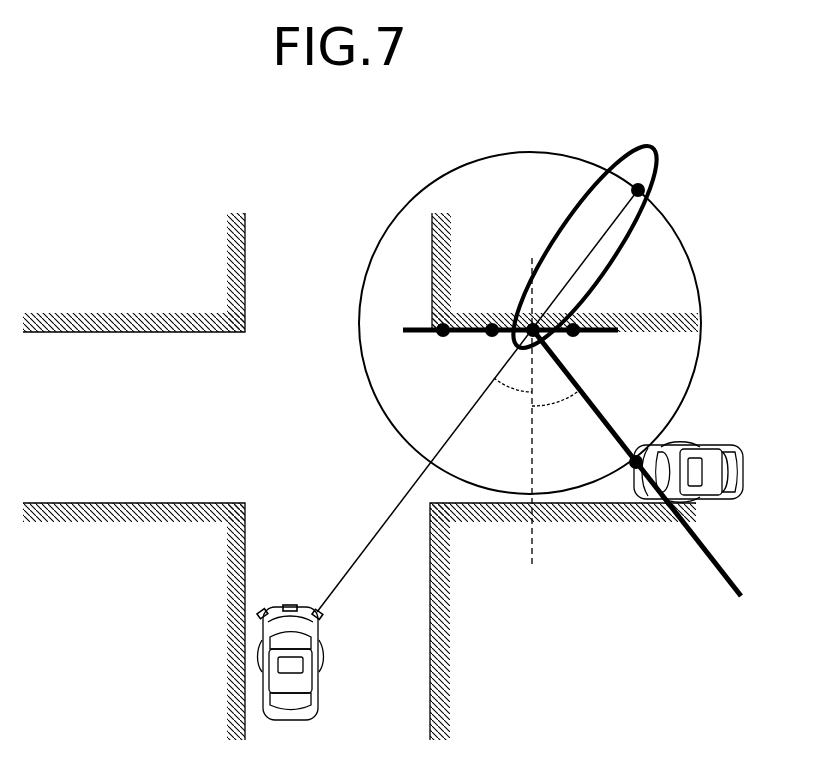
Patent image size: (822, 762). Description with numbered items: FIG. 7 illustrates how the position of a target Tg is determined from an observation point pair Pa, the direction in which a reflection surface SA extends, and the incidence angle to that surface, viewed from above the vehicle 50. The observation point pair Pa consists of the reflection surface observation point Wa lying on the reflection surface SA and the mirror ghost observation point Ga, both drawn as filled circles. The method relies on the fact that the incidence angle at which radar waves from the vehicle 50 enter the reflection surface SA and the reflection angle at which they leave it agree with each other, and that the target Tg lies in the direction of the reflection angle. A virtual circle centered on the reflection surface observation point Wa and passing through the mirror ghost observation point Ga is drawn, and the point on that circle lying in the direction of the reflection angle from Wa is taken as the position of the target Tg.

The mirror ghost observation point Ga is at (636, 183).
The observation point pair Pa is at (666, 184).
The reflection surface SA is at (603, 313).
The reflection surface observation point Wa is at (515, 320).
The target Tg is at (720, 444).
The vehicle 50 is at (322, 650).